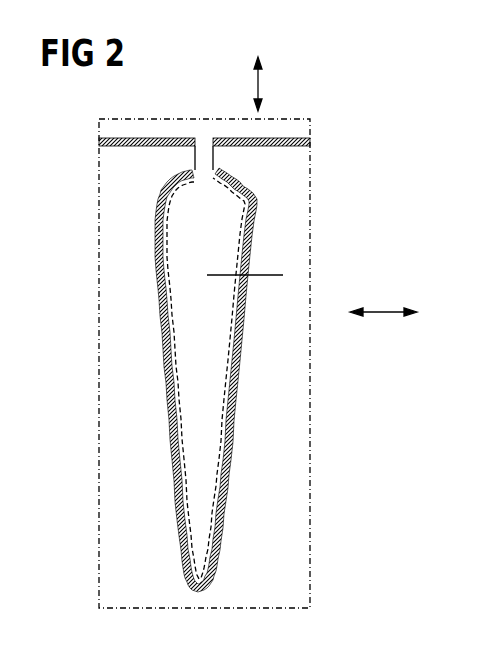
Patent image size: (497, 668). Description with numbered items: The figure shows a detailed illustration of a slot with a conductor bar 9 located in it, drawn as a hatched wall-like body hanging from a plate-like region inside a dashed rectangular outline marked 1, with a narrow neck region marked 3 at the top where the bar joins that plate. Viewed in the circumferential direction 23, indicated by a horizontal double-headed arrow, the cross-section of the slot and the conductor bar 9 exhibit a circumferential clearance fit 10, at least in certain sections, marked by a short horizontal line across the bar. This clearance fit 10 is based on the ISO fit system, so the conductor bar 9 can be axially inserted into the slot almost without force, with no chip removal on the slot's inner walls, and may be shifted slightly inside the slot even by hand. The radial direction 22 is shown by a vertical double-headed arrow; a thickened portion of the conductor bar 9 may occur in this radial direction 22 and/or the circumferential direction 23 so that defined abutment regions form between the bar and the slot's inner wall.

The turbine blade 1 is at (147, 153).
The slot opening 3 is at (203, 160).
The conductor bar 9 is at (256, 198).
The circumferential clearance fit 10 is at (272, 278).
The radial direction 22 is at (262, 85).
The circumferential direction 23 is at (383, 310).